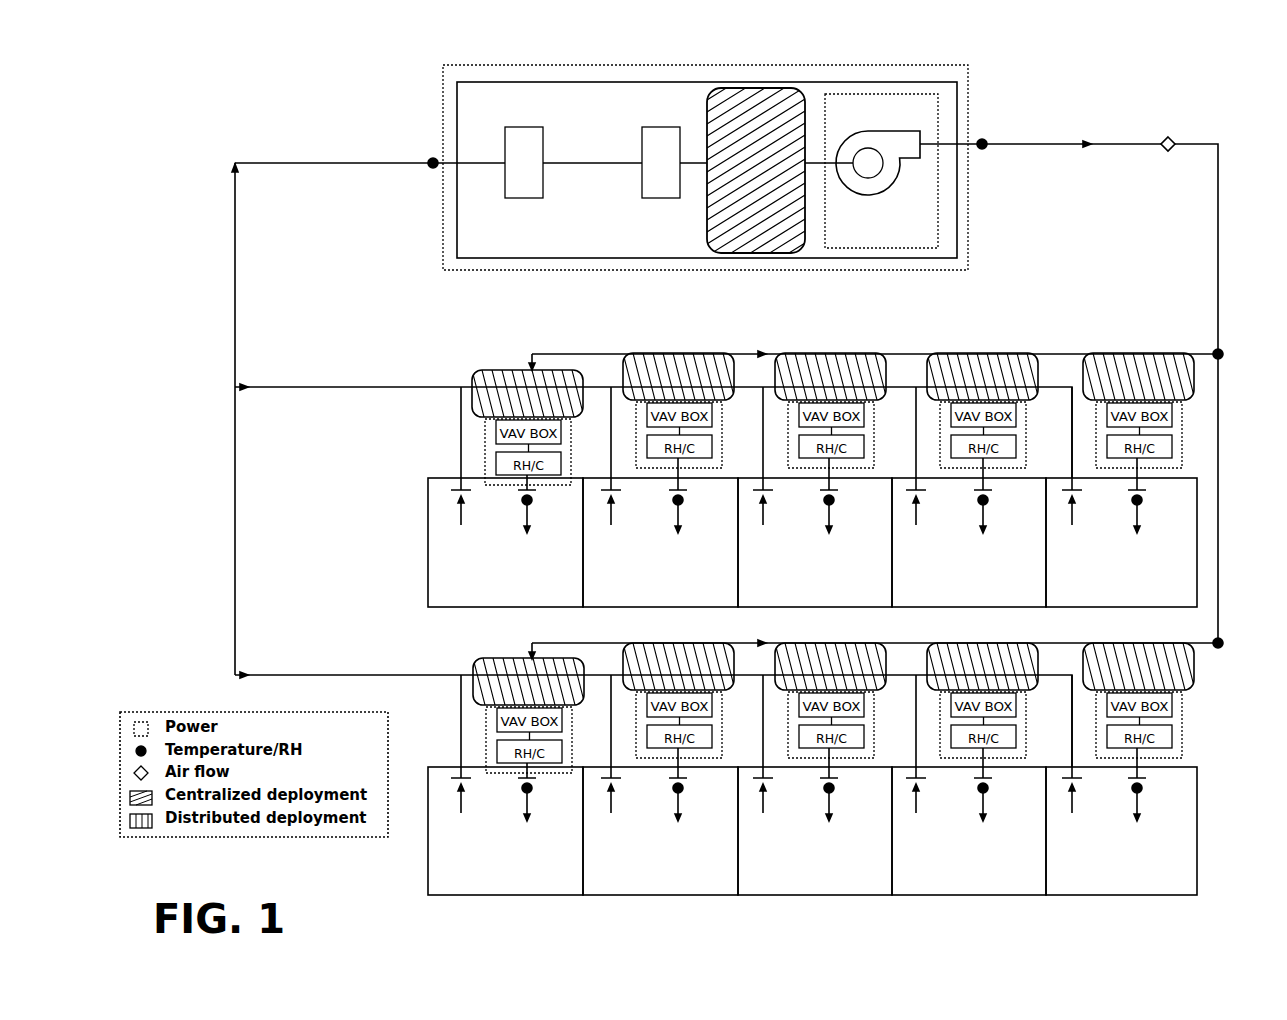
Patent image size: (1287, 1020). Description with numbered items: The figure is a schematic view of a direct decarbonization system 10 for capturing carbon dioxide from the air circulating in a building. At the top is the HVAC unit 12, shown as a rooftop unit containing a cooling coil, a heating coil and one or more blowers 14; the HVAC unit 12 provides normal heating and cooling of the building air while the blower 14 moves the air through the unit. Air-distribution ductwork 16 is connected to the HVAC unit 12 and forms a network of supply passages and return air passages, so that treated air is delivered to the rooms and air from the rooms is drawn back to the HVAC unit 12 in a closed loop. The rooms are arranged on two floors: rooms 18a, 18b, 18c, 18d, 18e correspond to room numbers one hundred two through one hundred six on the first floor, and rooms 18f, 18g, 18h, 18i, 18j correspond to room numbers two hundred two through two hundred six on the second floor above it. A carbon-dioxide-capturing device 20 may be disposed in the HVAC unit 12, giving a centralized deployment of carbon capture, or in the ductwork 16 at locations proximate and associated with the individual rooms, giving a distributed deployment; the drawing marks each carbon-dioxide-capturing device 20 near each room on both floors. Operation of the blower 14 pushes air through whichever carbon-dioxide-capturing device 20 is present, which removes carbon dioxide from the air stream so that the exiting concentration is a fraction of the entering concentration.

The direct decarbonization system 10 is at (1088, 88).
The HVAC unit 12 is at (666, 66).
The blower 14 is at (878, 130).
The air-distribution ductwork 16 is at (345, 165).
The room 18a is at (1117, 895).
The room 18b is at (967, 895).
The room 18c is at (802, 895).
The room 18d is at (650, 895).
The room 18e is at (507, 895).
The room 18f is at (1117, 607).
The room 18g is at (967, 607).
The room 18h is at (802, 607).
The room 18i is at (650, 607).
The room 18j is at (507, 607).
The carbon-dioxide-capturing device 20 is at (513, 368).